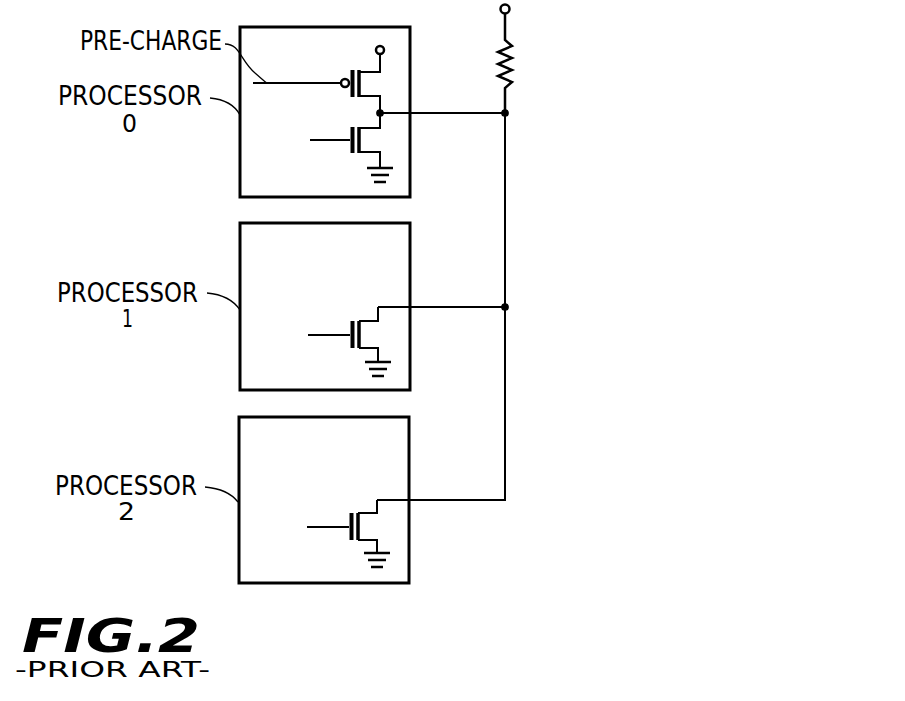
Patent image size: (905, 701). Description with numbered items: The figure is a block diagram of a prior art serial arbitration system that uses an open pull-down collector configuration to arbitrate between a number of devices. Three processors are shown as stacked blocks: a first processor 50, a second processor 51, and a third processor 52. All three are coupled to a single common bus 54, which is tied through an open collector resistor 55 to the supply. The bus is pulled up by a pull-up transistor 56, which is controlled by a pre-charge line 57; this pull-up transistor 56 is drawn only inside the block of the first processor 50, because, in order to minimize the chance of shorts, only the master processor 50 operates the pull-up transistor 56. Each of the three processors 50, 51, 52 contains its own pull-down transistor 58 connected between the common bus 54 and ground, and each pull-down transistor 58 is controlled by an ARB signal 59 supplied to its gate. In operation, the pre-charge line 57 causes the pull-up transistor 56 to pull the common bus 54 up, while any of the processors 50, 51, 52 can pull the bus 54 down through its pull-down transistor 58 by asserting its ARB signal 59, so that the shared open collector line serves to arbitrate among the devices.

The processor 0 50 is at (410, 43).
The processor 1 51 is at (410, 253).
The processor 2 52 is at (408, 447).
The common bus 54 is at (505, 405).
The open collector resistor 55 is at (507, 70).
The pull-up transistor 56 is at (370, 83).
The pre-charge line 57 is at (312, 83).
The pull-down transistor 58 is at (370, 137).
The ARB signal 59 is at (330, 138).